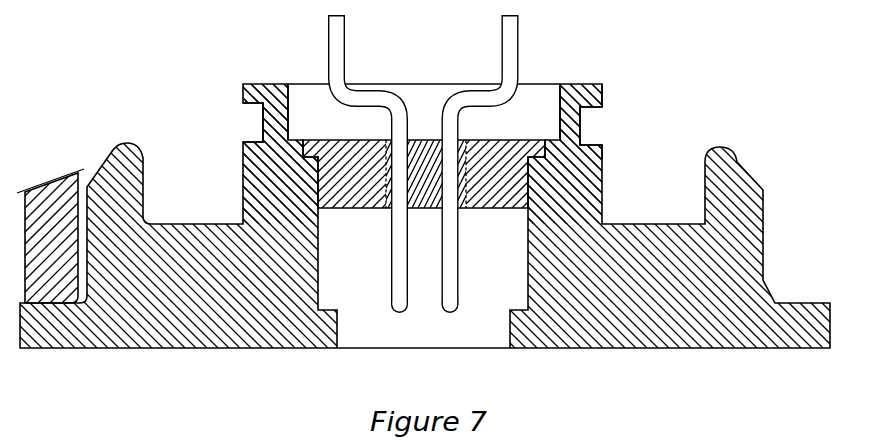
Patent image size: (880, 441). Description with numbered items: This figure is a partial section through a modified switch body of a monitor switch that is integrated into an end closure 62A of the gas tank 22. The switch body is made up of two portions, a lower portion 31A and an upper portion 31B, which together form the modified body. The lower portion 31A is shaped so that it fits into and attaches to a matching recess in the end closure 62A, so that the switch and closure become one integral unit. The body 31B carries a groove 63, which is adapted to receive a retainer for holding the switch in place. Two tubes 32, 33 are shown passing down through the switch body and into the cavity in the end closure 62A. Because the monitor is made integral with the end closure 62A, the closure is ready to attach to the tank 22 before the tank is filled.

The gas tank 22 is at (57, 180).
The switch body lower portion 31A is at (527, 184).
The switch body 31B is at (580, 199).
The first tube 32 is at (397, 275).
The second tube 33 is at (452, 267).
The end closure 62A is at (753, 341).
The groove 63 is at (597, 124).